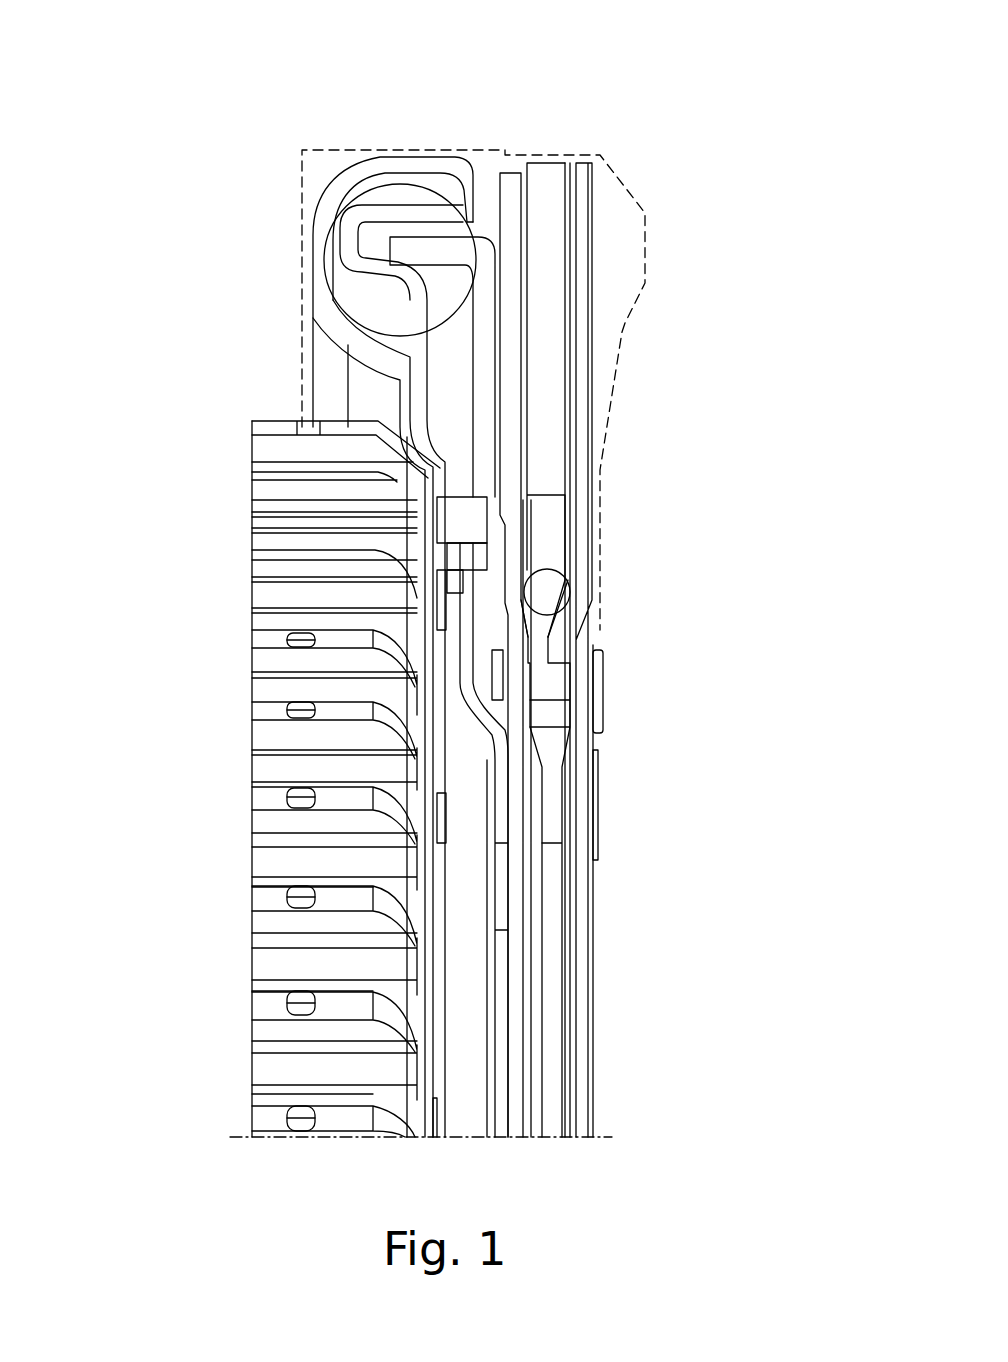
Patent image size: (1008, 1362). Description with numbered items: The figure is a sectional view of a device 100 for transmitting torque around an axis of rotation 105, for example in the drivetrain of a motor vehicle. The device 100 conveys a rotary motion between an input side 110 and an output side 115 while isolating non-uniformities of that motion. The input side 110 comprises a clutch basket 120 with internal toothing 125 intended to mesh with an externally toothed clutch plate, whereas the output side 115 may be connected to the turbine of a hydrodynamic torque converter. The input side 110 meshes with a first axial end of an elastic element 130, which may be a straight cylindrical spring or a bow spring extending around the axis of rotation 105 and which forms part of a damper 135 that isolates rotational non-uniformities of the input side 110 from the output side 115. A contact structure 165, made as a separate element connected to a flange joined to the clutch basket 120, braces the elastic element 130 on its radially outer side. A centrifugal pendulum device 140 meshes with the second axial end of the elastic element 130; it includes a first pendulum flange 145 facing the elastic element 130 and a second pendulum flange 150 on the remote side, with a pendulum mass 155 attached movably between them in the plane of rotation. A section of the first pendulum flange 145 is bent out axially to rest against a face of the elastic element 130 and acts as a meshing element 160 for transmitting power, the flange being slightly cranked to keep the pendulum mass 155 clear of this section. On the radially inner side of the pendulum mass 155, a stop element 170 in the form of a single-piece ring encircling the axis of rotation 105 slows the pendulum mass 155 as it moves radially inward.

The device for transmitting torque 100 is at (198, 72).
The axis of rotation 105 is at (603, 1136).
The input side 110 is at (152, 345).
The output side 115 is at (765, 340).
The clutch basket 120 is at (250, 428).
The internal toothing 125 is at (230, 460).
The elastic element 130 is at (372, 252).
The damper 135 is at (395, 143).
The centrifugal pendulum device 140 is at (570, 150).
The first pendulum flange 145 is at (505, 283).
The second pendulum flange 150 is at (577, 452).
The pendulum mass 155 is at (547, 350).
The meshing element 160 is at (480, 208).
The contact structure 165 is at (330, 188).
The stop element 170 is at (547, 592).